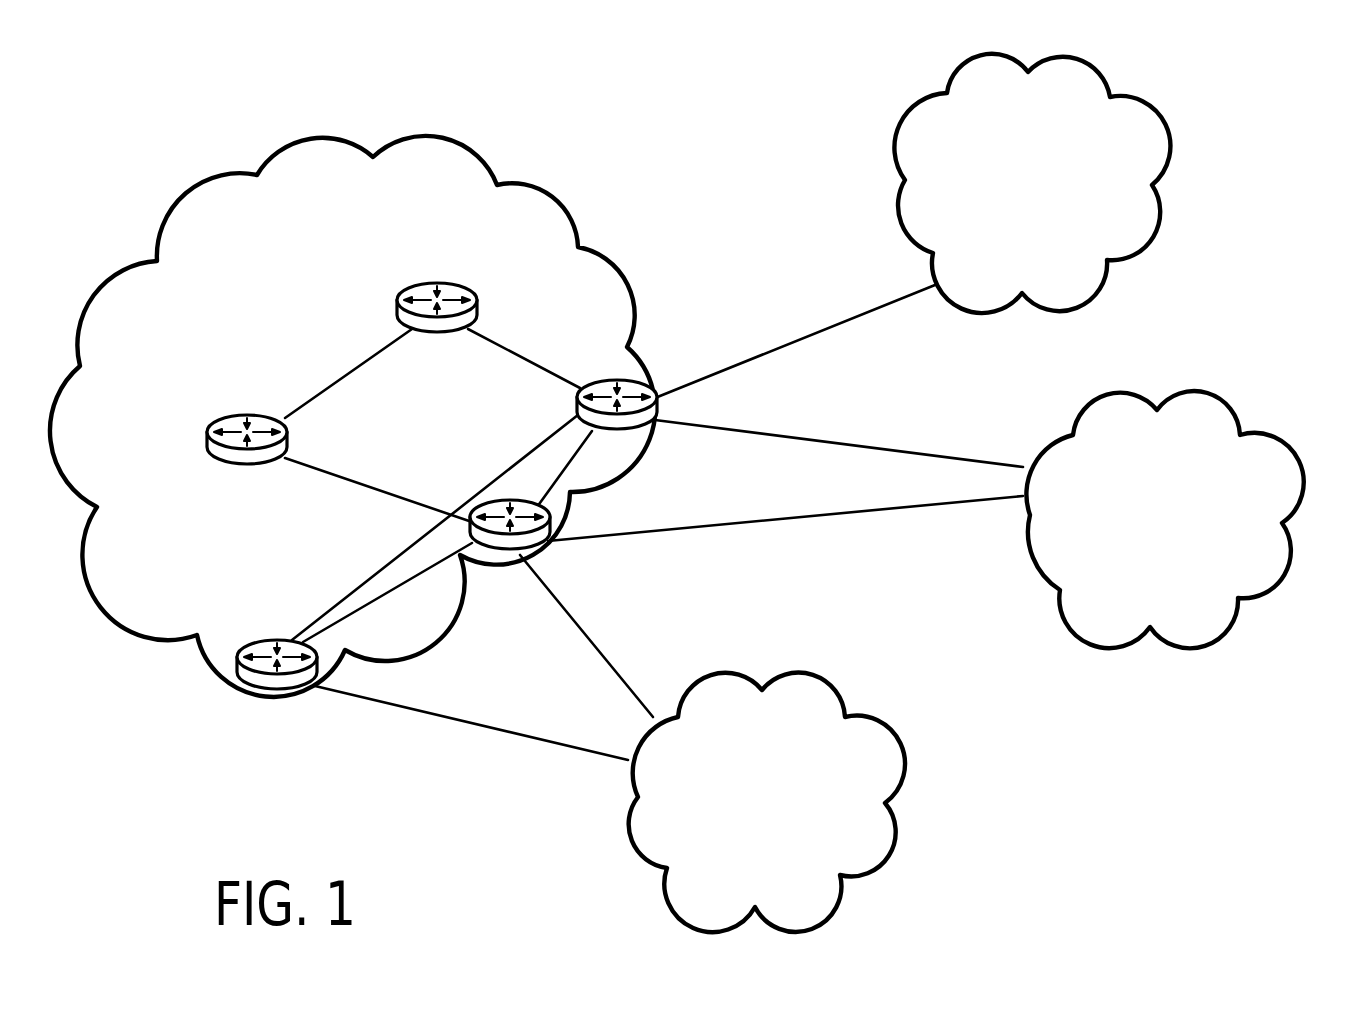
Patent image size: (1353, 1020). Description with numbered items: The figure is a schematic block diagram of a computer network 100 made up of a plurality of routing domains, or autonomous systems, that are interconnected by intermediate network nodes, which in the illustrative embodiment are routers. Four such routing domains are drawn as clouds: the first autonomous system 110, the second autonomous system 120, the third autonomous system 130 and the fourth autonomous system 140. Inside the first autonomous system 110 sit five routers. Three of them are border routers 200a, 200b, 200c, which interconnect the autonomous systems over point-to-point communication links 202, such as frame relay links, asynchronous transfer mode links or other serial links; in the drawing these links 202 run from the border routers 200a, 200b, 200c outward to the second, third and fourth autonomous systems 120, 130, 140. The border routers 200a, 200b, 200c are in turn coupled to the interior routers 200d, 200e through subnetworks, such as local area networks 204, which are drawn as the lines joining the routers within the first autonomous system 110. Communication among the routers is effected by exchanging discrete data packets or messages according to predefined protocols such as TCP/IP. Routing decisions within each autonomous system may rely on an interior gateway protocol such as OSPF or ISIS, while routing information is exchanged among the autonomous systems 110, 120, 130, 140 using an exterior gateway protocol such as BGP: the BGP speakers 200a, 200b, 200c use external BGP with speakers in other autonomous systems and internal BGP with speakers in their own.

The computer network 100 is at (1256, 103).
The autonomous system AS1 110 is at (270, 287).
The autonomous system AS2 120 is at (1057, 206).
The autonomous system AS3 130 is at (1174, 551).
The autonomous system AS4 140 is at (781, 811).
The border router 200a is at (523, 544).
The border router 200b is at (250, 639).
The border router 200c is at (592, 378).
The router 200d is at (430, 281).
The router 200e is at (243, 414).
The point-to-point communication links 202 is at (766, 355).
The local area networks 204 is at (352, 373).